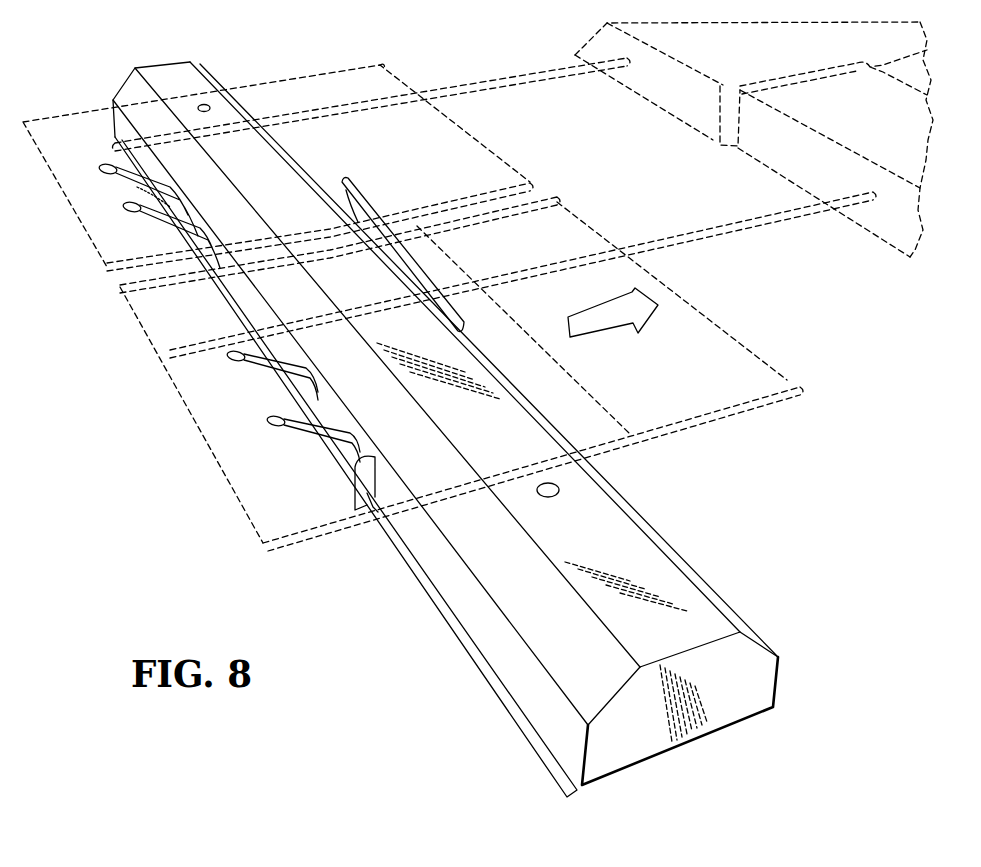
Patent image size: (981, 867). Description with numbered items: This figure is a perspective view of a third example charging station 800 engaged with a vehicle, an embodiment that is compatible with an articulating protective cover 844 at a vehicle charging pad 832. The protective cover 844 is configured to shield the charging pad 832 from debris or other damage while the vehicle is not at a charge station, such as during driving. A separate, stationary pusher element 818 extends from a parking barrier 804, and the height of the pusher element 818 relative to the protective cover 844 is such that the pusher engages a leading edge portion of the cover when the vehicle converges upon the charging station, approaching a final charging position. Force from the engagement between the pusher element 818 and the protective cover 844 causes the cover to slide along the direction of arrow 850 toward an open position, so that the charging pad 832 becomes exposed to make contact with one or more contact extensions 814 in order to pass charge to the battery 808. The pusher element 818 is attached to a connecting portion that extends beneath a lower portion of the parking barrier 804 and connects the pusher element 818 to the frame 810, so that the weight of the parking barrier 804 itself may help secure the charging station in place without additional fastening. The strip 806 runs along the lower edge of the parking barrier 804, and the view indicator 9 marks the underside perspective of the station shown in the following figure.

The charging station 800 is at (108, 474).
The parking barrier 804 is at (687, 563).
The rail strip 806 is at (448, 625).
The battery 808 is at (695, 95).
The frame 810 is at (355, 470).
The contact extensions 814 is at (100, 170).
The pusher element 818 is at (423, 257).
The charging pad 832 is at (80, 110).
The protective cover 844 is at (437, 93).
The arrow 850 is at (598, 332).
The view indicator 9 is at (818, 347).